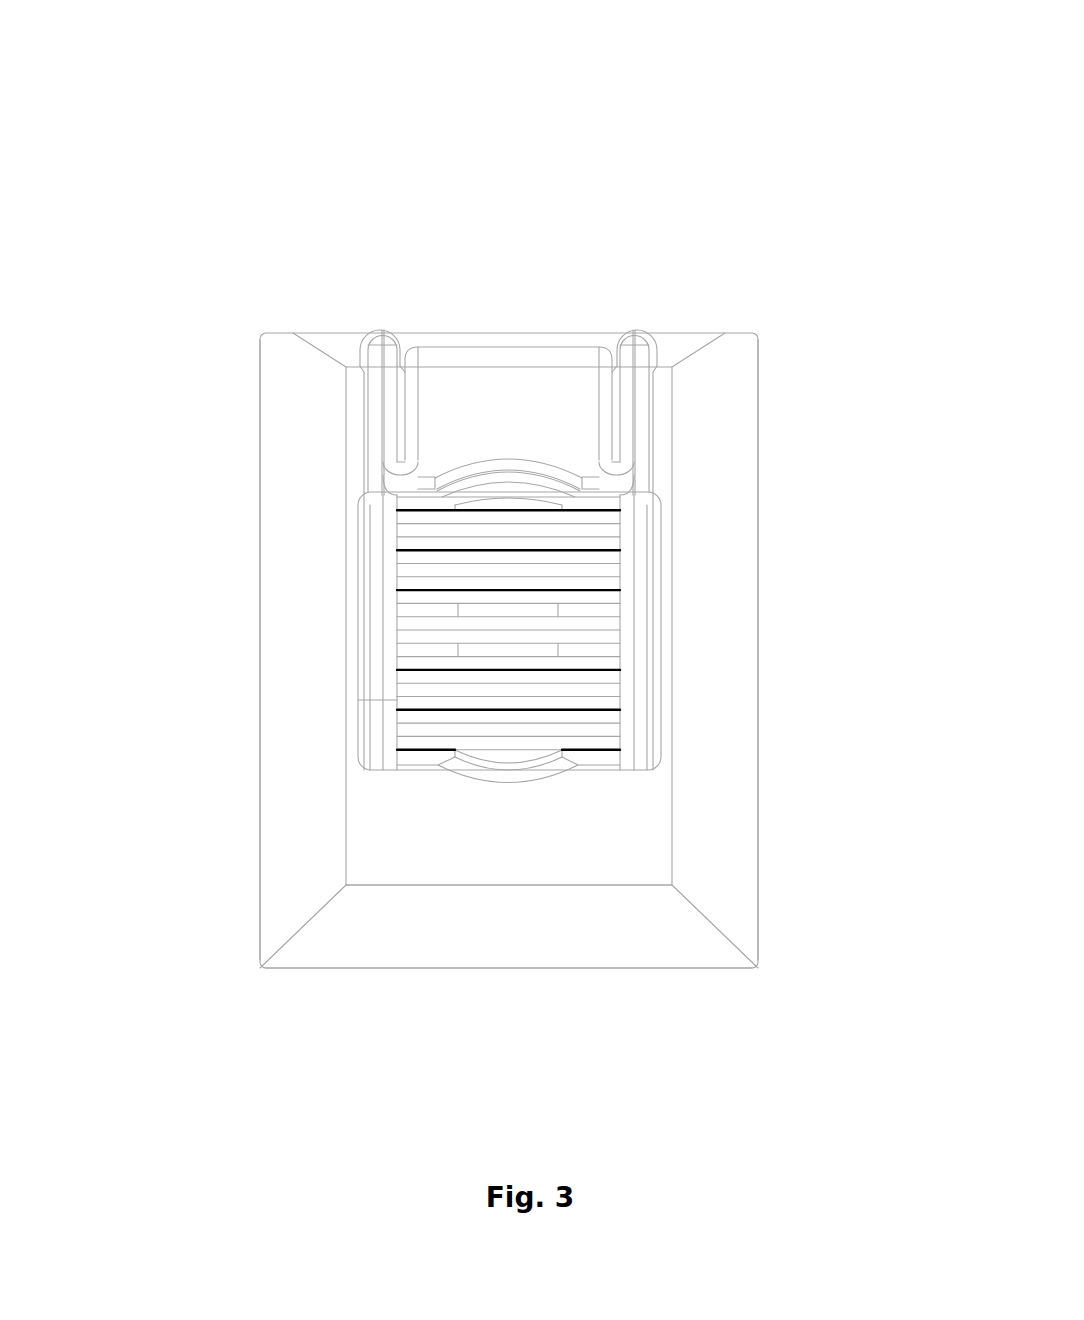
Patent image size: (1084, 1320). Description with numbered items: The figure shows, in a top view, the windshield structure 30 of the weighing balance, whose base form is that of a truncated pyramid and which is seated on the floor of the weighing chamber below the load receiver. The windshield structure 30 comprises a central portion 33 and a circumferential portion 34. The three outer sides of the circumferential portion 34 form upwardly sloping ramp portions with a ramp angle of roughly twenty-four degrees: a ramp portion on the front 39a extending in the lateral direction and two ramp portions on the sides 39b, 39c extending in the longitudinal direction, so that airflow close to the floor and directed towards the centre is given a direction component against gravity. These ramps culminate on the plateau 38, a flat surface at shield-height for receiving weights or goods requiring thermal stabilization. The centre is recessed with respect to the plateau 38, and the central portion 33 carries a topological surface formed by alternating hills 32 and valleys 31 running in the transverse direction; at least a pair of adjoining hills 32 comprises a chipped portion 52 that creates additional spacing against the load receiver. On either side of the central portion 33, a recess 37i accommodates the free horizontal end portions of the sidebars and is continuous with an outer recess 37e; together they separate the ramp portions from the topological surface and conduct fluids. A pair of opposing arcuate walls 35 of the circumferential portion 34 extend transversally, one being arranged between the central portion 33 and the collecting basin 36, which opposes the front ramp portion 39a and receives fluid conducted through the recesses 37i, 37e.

The windshield structure 30 is at (836, 140).
The circumferential portion 34 is at (290, 326).
The collecting basin 36 is at (458, 383).
The wall 35 is at (512, 460).
The recess 37e is at (380, 398).
The valley 31 is at (617, 538).
The chipped portion 52 is at (562, 648).
The hill 32 is at (396, 533).
The recess 37i is at (378, 612).
The ramp portion on the side 39c is at (290, 457).
The ramp portion on the side 39b is at (733, 708).
The plateau 38 is at (597, 860).
The ramp portion on the front 39a is at (633, 949).
The central portion 33 is at (424, 702).